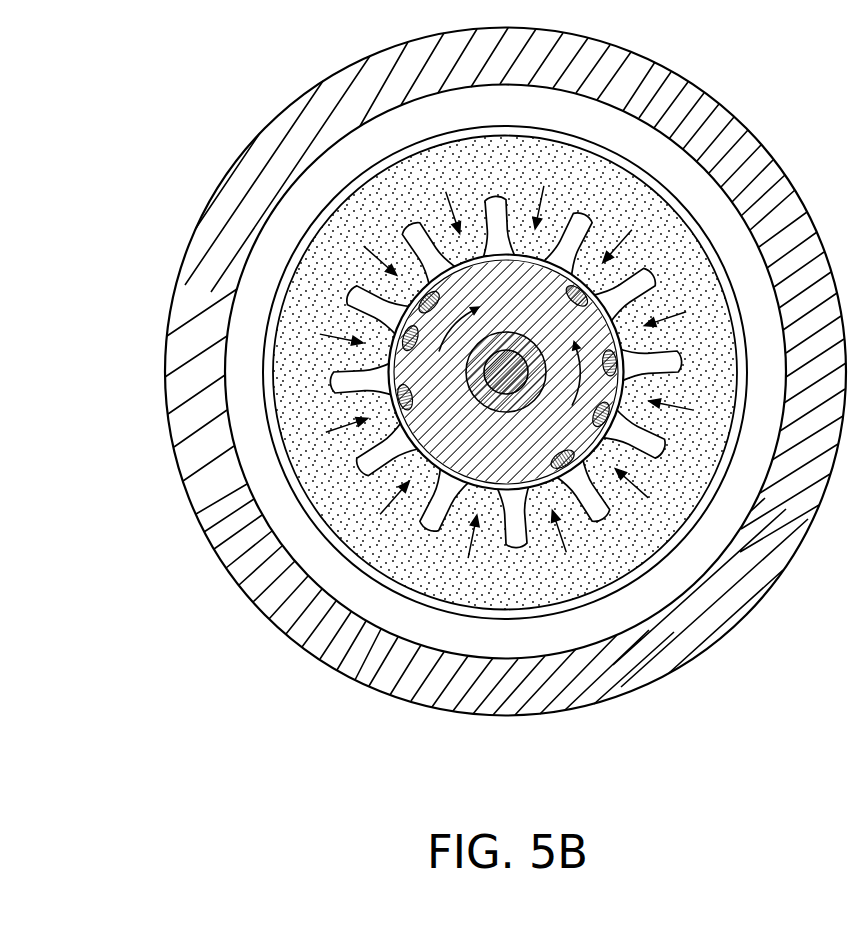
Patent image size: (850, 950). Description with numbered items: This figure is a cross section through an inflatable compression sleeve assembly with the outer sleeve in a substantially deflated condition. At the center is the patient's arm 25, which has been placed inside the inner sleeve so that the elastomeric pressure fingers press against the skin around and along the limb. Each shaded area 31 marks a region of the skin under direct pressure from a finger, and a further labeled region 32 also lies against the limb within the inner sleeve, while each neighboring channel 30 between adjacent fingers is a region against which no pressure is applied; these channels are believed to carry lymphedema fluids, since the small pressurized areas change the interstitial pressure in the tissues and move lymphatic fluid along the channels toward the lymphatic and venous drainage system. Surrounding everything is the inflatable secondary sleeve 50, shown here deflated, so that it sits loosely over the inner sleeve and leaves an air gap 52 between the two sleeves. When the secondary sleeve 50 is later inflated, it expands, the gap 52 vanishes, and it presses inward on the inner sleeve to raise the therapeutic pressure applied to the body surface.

The arm 25 is at (526, 448).
The channel 30 is at (600, 358).
The shaded area 31 is at (441, 303).
The magnet 32 is at (572, 297).
The secondary sleeve 50 is at (284, 138).
The air gap 52 is at (260, 274).